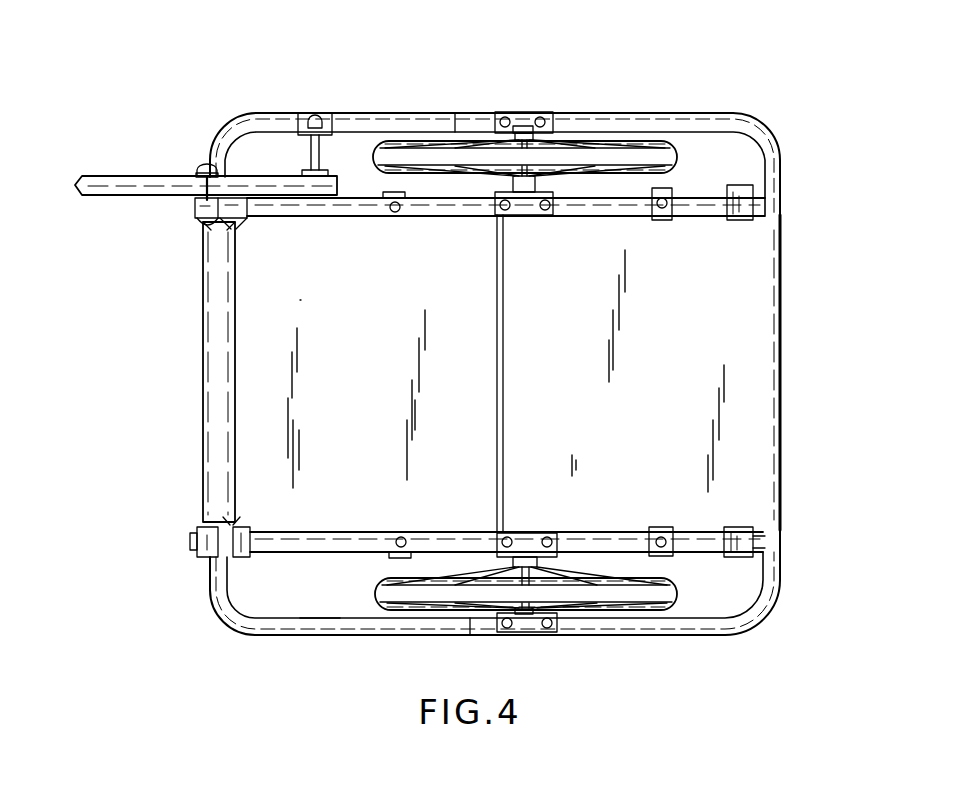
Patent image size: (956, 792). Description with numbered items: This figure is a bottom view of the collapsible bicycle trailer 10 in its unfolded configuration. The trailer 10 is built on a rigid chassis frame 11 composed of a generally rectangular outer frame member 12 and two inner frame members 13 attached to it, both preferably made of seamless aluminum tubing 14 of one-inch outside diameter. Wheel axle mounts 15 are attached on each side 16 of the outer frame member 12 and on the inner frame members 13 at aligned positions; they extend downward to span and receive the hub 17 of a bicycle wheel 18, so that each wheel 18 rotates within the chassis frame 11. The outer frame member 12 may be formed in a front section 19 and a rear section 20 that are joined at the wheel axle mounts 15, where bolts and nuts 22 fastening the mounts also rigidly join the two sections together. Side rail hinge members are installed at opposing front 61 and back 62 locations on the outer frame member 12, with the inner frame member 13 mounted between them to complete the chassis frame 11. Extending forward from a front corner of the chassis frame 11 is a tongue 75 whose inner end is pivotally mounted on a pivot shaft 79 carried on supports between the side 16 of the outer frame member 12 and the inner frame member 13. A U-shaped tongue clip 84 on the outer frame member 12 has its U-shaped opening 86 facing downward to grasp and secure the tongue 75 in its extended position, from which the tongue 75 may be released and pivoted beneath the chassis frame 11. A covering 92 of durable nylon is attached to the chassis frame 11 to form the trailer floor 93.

The collapsible bicycle trailer 10 is at (643, 100).
The chassis frame 11 is at (774, 128).
The outer frame member 12 is at (385, 630).
The inner frame member 13 is at (371, 204).
The aluminum tubing 14 is at (333, 549).
The wheel axle mount 15 is at (517, 112).
The side of outer frame member 16 is at (464, 116).
The hub 17 is at (560, 187).
The bicycle wheel 18 is at (596, 156).
The front section 19 is at (409, 118).
The rear section 20 is at (676, 126).
The nut 22 is at (542, 116).
The front location 61 is at (205, 216).
The back location 62 is at (754, 199).
The tongue 75 is at (115, 177).
The pivot shaft 79 is at (315, 166).
The tongue clip 84 is at (226, 176).
The U-shaped opening 86 is at (198, 175).
The covering 92 is at (203, 332).
The trailer floor 93 is at (262, 428).